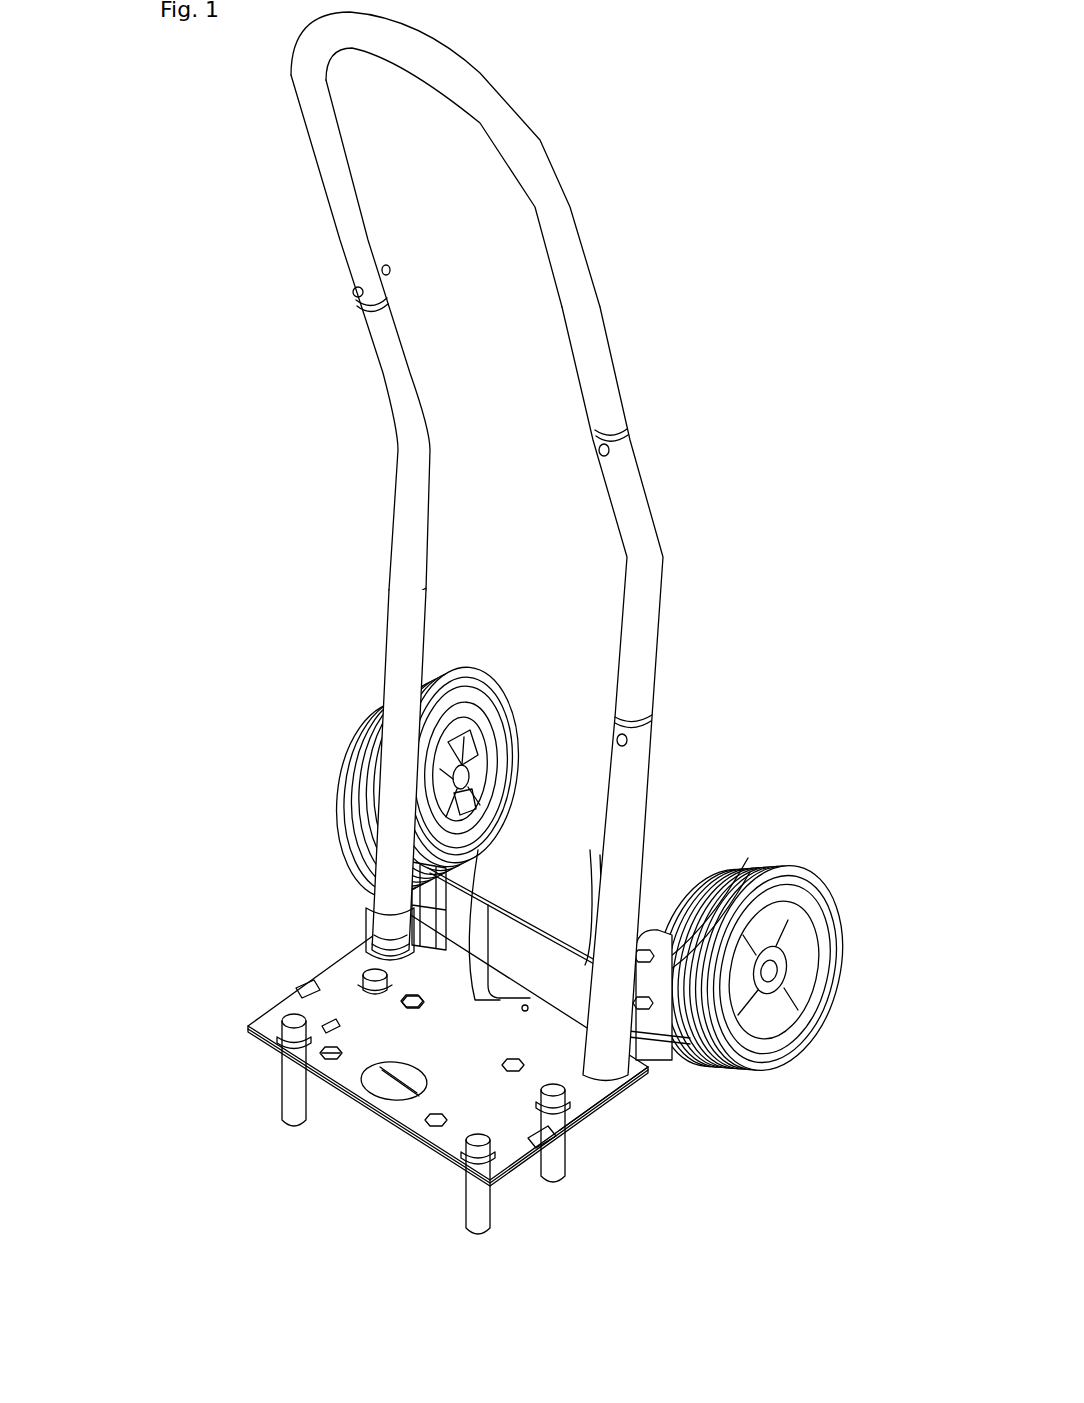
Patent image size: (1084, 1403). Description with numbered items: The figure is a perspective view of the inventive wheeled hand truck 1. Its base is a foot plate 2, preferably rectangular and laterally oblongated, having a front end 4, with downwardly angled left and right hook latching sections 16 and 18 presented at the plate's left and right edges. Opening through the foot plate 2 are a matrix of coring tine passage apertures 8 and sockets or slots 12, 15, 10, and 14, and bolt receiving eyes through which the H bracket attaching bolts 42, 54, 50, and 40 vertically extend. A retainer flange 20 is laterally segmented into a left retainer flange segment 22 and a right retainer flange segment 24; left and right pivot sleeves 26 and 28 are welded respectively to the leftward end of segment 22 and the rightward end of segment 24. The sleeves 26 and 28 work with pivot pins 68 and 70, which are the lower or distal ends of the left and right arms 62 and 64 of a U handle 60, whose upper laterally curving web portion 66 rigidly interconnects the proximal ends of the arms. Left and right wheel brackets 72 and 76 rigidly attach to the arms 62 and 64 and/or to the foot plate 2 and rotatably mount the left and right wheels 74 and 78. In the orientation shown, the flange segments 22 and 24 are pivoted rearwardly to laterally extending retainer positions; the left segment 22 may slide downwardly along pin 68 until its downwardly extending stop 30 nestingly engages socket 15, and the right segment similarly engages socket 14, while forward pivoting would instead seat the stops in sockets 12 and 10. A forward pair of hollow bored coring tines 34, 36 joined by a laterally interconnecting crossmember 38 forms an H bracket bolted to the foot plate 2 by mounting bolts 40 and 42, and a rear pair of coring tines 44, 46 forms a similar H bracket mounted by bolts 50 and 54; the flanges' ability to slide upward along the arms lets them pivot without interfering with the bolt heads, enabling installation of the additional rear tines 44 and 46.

The wheeled hand truck 1 is at (718, 218).
The foot plate 2 is at (408, 1105).
The front end 4 is at (270, 1040).
The coring tine passage apertures 8 is at (383, 1138).
The right socket 10 is at (347, 1063).
The left socket 12 is at (614, 1112).
The socket 14 is at (482, 905).
The socket 15 is at (527, 1011).
The left hook latching section 16 is at (545, 1137).
The right hook latching section 18 is at (300, 990).
The retainer flange 20 is at (506, 891).
The left retainer flange segment 22 is at (590, 940).
The right retainer flange segment 24 is at (485, 890).
The left pivot sleeve 26 is at (622, 1063).
The right pivot sleeve 28 is at (377, 925).
The stop 30 is at (518, 1005).
The front coring tine 34 is at (479, 1213).
The front coring tine 36 is at (285, 1097).
The crossmember 38 is at (328, 1060).
The mounting bolt 40 is at (395, 1092).
The mounting bolt 42 is at (337, 1028).
The rear coring tine 44 is at (556, 1165).
The rear coring tine 46 is at (358, 977).
The bolt 50 is at (508, 1062).
The bolt 54 is at (420, 1000).
The "U" handle 60 is at (460, 546).
The left arm 62 is at (643, 773).
The right arm 64 is at (387, 657).
The web portion 66 is at (407, 50).
The pivot pin 68 is at (618, 1025).
The pivot pin 70 is at (387, 898).
The left wheel bracket 72 is at (668, 932).
The left wheel 74 is at (787, 862).
The right wheel bracket 76 is at (453, 810).
The right wheel 78 is at (440, 752).